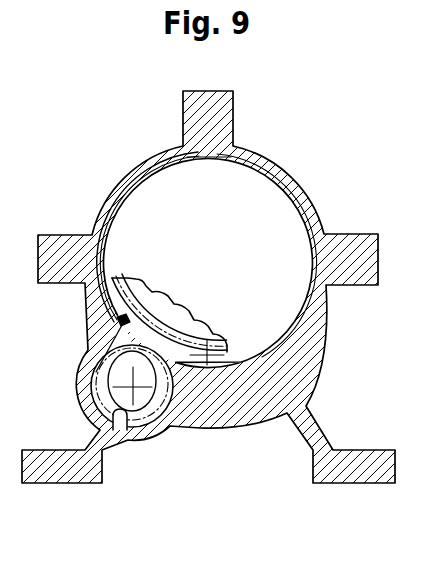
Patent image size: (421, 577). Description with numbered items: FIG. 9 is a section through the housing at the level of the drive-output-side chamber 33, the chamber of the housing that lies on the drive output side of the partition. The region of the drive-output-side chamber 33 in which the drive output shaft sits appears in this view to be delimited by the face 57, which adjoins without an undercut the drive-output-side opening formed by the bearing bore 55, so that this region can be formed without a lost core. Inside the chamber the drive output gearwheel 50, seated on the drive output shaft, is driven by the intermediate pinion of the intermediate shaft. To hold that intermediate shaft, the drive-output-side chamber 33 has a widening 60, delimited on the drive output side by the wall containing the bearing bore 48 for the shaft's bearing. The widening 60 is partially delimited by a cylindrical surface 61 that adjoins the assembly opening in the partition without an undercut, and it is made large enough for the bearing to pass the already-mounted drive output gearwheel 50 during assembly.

The drive-output-side chamber 33 is at (128, 222).
The bearing bore 55 is at (172, 157).
The face 57 is at (141, 185).
The bearing bore 48 is at (179, 386).
The drive output gearwheel 50 is at (207, 345).
The widening 60 is at (136, 398).
The surface 61 is at (127, 422).